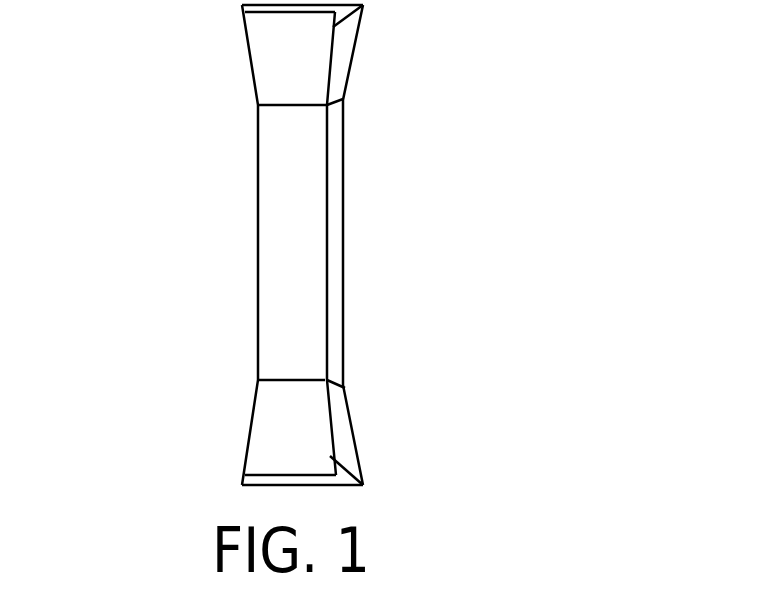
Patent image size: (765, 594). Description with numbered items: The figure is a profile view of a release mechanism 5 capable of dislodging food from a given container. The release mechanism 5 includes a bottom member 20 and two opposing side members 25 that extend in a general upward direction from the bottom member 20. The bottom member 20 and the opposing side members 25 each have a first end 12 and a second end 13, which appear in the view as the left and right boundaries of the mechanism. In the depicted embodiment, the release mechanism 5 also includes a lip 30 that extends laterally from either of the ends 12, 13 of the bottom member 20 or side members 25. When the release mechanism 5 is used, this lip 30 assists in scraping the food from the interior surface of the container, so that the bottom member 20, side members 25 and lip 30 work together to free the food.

The release mechanism 5 is at (78, 36).
The first end 12 is at (245, 35).
The second end 13 is at (350, 75).
The bottom member 20 is at (273, 318).
The side members 25 is at (268, 72).
The lip 30 is at (333, 207).